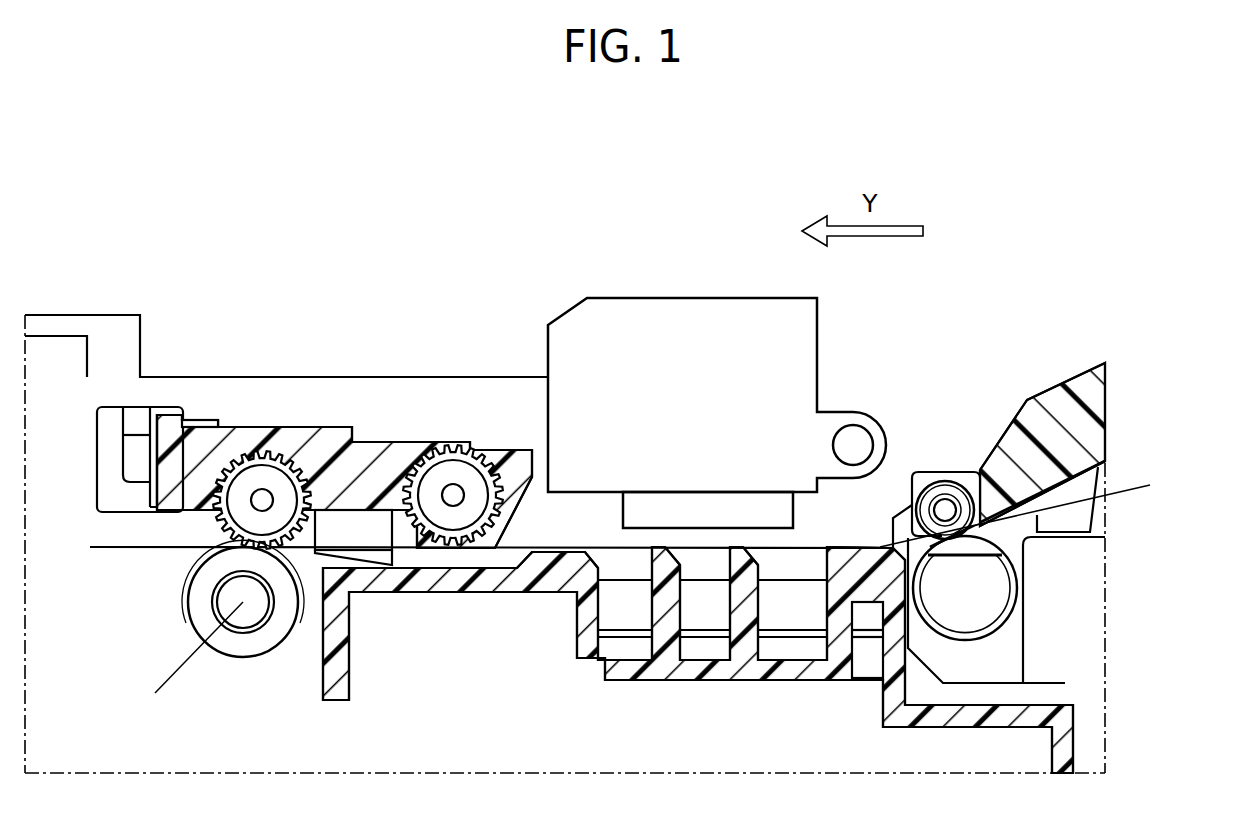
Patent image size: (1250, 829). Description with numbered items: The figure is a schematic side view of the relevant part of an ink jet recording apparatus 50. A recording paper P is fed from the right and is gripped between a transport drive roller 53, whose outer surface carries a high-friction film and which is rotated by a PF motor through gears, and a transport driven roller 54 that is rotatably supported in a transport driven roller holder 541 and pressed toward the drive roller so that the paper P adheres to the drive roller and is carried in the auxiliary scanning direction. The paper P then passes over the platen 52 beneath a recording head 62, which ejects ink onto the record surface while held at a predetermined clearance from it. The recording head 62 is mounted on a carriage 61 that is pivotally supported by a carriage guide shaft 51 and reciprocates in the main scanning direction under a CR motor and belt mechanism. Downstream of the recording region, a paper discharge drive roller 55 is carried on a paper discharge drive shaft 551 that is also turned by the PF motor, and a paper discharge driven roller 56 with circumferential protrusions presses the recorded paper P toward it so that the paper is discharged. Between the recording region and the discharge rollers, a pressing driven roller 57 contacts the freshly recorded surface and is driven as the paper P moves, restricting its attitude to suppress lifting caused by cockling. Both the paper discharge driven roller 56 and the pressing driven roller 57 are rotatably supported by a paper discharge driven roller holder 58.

The ink jet recording apparatus 50 is at (445, 288).
The carriage guide shaft 51 is at (853, 445).
The platen 52 is at (667, 663).
The transport drive roller 53 is at (987, 590).
The transport driven roller 54 is at (955, 490).
The transport driven roller holder 541 is at (1068, 437).
The paper discharge drive roller 55 is at (267, 650).
The paper discharge drive shaft 551 is at (230, 622).
The paper discharge driven roller 56 is at (288, 457).
The pressing driven roller 57 is at (475, 462).
The paper discharge driven roller holder 58 is at (364, 463).
The carriage 61 is at (692, 322).
The recording head 62 is at (716, 510).
The recording paper P is at (1127, 487).